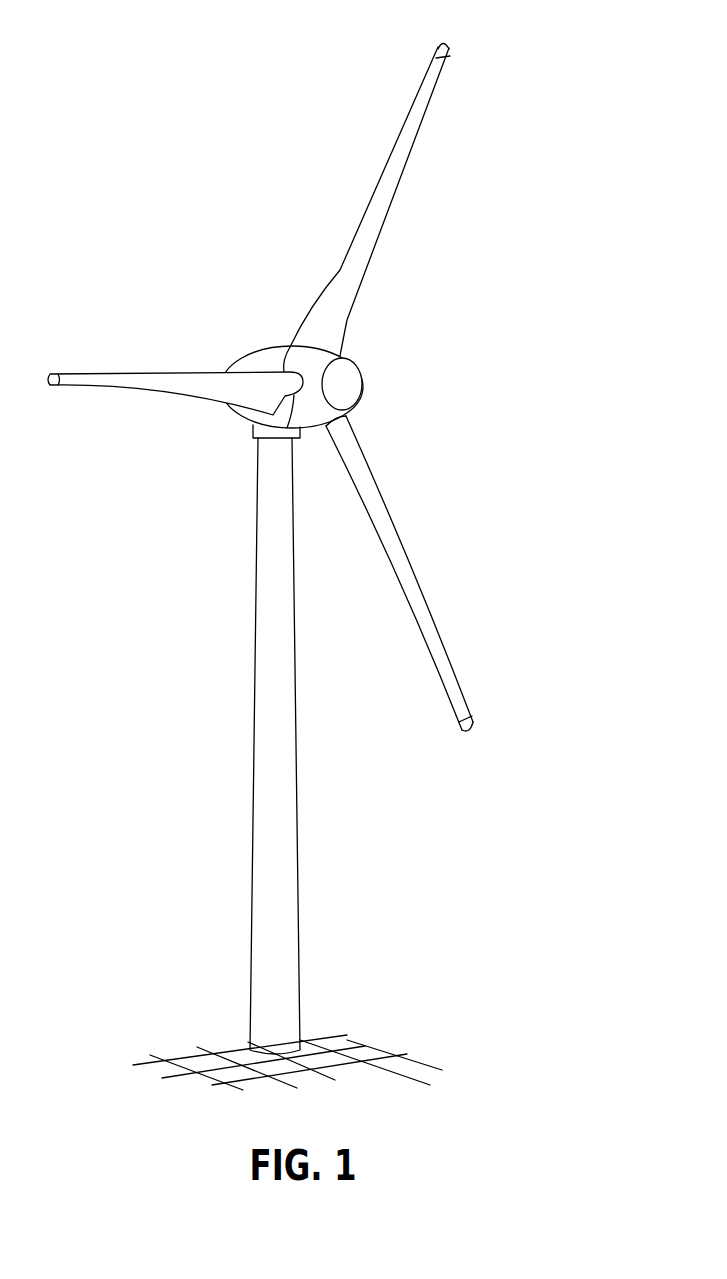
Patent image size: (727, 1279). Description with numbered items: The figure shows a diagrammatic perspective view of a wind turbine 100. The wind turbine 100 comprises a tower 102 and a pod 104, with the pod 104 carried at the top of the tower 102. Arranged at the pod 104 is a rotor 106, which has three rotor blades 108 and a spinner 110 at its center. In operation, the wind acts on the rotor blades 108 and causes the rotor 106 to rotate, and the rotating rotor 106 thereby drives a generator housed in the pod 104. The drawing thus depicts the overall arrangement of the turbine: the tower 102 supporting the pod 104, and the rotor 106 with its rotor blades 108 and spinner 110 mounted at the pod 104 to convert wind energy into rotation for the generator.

The wind turbine 100 is at (305, 567).
The tower 102 is at (277, 838).
The pod 104 is at (270, 362).
The rotor 106 is at (305, 388).
The rotor blades 108 is at (403, 158).
The spinner 110 is at (348, 385).